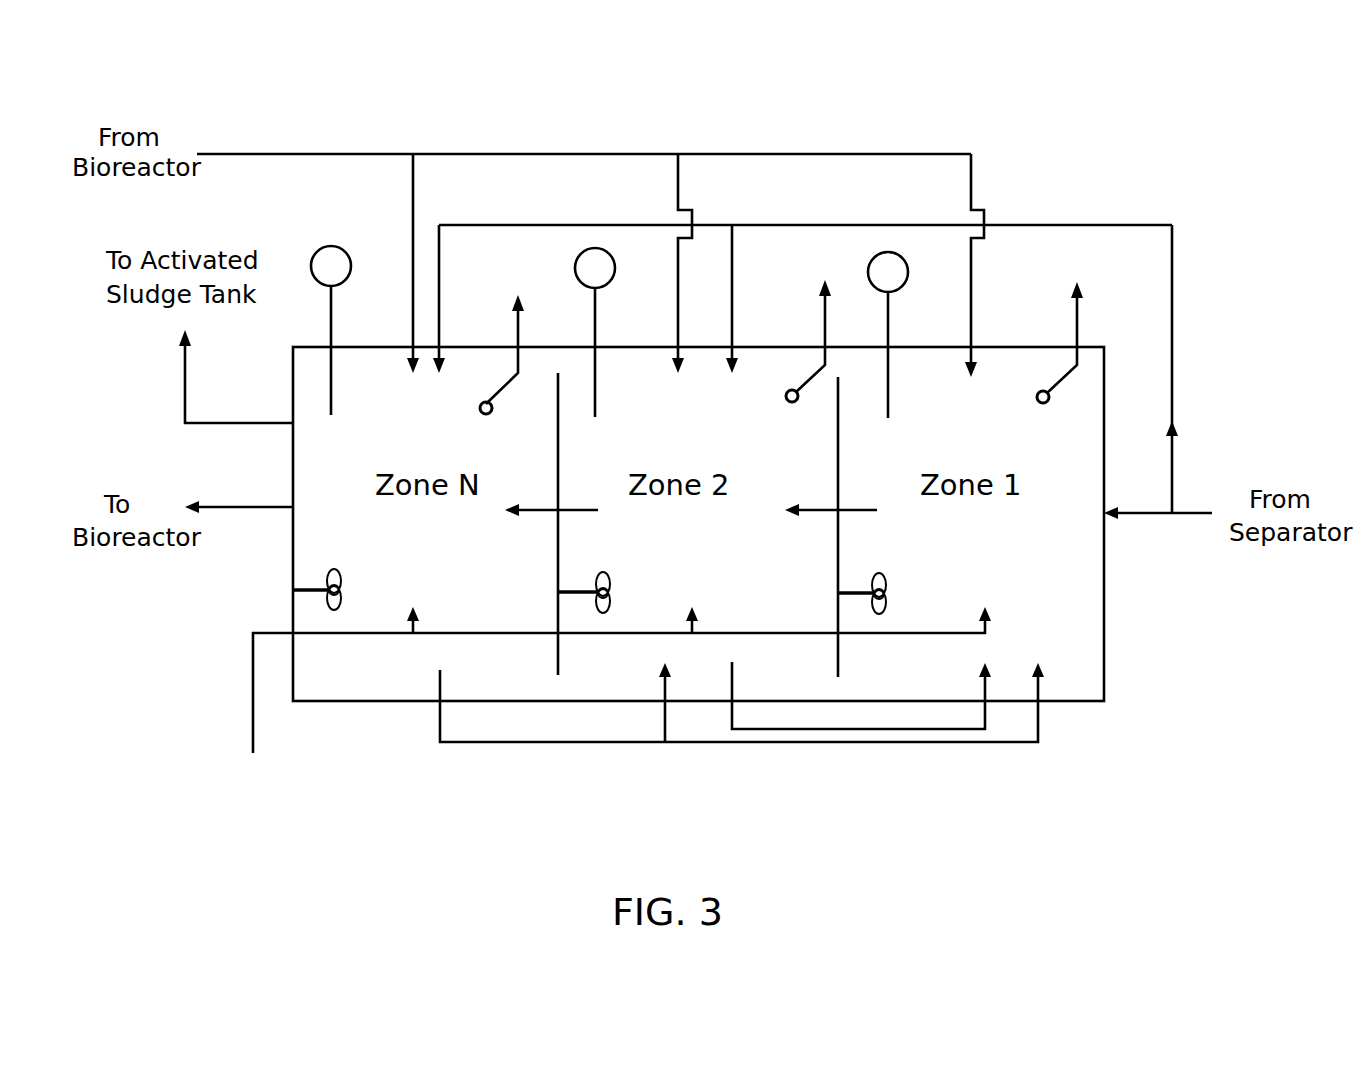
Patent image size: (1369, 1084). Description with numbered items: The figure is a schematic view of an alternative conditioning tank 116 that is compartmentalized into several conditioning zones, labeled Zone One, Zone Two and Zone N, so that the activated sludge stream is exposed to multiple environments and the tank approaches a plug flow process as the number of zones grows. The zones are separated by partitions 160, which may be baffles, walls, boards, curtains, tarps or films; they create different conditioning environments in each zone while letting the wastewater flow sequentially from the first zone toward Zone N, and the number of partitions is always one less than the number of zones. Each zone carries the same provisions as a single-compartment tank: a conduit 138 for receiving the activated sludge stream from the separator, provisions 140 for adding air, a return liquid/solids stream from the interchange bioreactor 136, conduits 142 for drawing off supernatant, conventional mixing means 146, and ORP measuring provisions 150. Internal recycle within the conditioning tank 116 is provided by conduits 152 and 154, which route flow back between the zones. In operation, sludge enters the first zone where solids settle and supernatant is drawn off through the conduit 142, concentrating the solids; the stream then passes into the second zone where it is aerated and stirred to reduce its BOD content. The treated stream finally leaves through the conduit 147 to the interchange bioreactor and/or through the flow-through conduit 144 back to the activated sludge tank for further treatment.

The conditioning tank 116 is at (1104, 703).
The return stream from interchange bioreactor 136 is at (319, 125).
The conduit from separator 138 is at (1193, 492).
The air addition provision 140 is at (253, 712).
The supernatant draw-off conduit 142 is at (533, 319).
The flow-through conduit to activated sludge tank 144 is at (205, 385).
The mixing means 146 is at (340, 575).
The conduit to interchange bioreactor 147 is at (242, 488).
The ORP measuring provision 150 is at (306, 318).
The internal recycle conduit 152 is at (519, 742).
The internal recycle conduit 154 is at (877, 729).
The partitions 160 is at (558, 443).